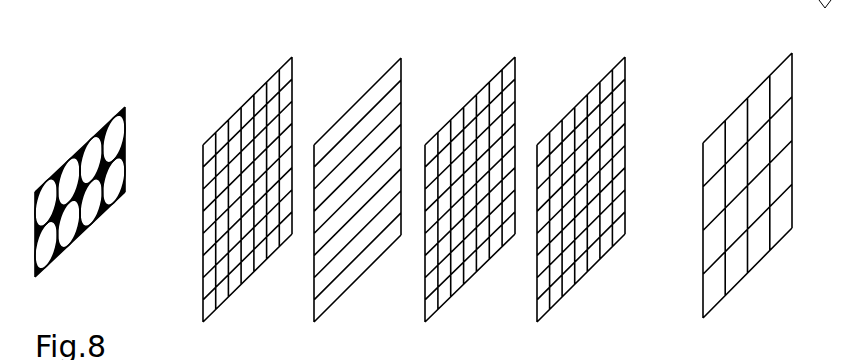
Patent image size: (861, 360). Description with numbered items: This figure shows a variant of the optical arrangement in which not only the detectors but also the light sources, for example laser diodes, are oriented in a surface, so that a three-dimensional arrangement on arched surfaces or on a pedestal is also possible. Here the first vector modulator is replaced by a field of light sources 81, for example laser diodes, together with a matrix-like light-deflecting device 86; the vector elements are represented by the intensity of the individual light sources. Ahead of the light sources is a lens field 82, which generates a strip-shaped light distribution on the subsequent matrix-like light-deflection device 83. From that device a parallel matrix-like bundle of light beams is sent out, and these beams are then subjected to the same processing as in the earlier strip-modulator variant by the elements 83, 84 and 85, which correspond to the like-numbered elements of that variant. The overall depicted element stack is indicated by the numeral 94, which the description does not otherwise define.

The field of light sources 81 is at (108, 138).
The lens field 82 is at (342, 143).
The matrix-like light-deflection device 83 is at (457, 140).
The processing element 84 is at (565, 140).
The processing element 85 is at (780, 90).
The matrix-like light-deflecting device 86 is at (240, 138).
The optical element stack 94 is at (622, 345).